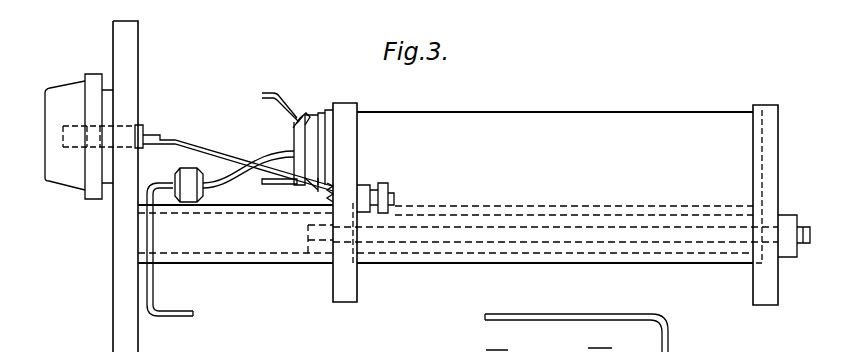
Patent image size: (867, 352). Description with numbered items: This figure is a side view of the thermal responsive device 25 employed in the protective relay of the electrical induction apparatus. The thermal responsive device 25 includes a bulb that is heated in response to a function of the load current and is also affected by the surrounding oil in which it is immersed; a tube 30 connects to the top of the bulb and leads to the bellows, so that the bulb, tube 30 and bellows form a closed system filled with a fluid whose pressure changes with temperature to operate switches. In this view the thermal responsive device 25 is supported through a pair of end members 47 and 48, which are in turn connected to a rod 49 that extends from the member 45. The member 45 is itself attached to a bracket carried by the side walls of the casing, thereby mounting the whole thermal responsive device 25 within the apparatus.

The member 45 is at (136, 85).
The thermal responsive device 25 is at (292, 136).
The end member 47 is at (344, 103).
The end member 48 is at (766, 105).
The rod 49 is at (278, 264).
The tube 30 is at (153, 287).